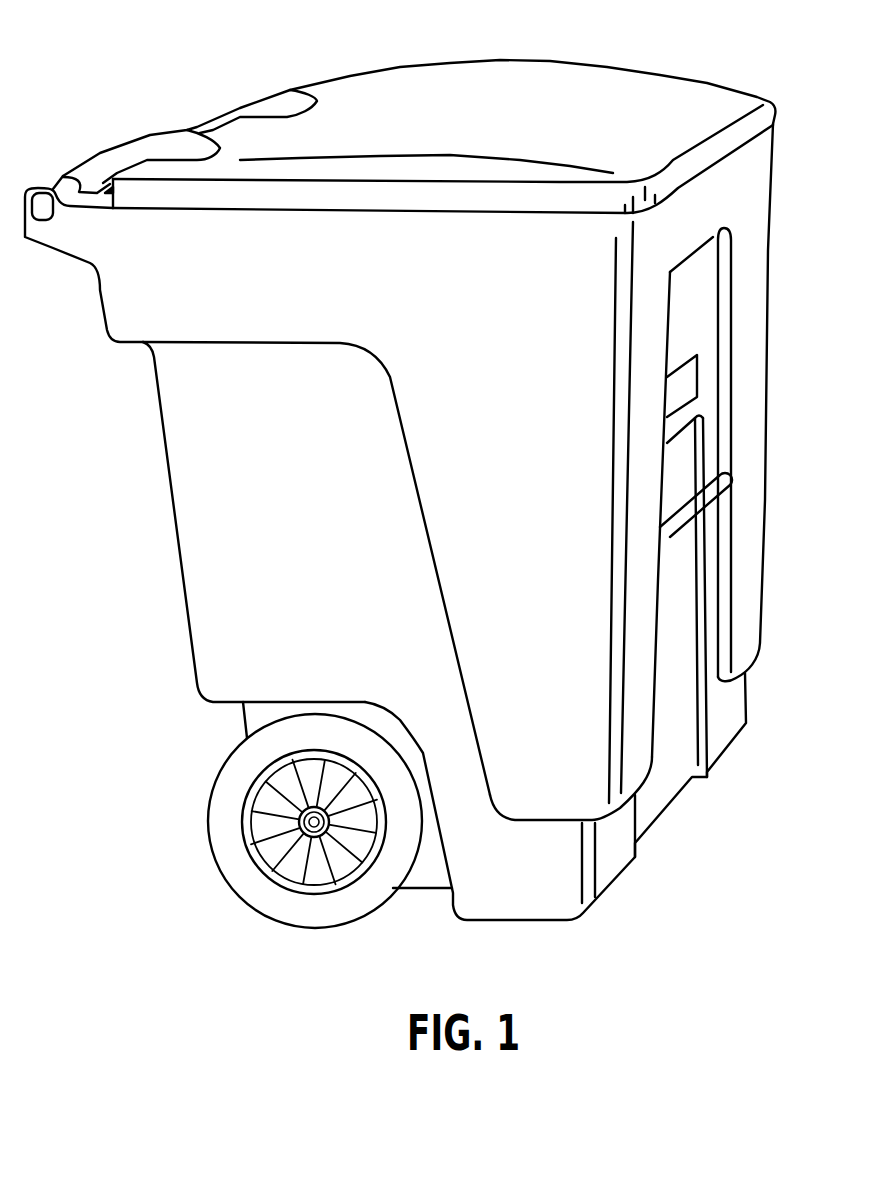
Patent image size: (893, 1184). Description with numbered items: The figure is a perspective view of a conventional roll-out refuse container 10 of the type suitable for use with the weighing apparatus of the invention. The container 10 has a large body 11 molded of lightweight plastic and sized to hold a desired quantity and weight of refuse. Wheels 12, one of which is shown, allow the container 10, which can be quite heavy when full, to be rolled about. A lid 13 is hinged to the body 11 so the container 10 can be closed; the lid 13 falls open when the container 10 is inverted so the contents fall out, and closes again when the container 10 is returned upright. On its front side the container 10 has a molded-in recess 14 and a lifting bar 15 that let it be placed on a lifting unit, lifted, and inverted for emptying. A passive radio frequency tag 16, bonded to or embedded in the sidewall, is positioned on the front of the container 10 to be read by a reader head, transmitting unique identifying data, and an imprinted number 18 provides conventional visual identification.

The roll-out refuse container 10 is at (136, 509).
The body 11 is at (208, 602).
The wheels 12 is at (226, 789).
The lid 13 is at (370, 87).
The molded-in recess 14 is at (708, 242).
The lifting bar 15 is at (683, 518).
The radio frequency (RF) tag 16 is at (690, 380).
The imprinted number 18 is at (697, 337).